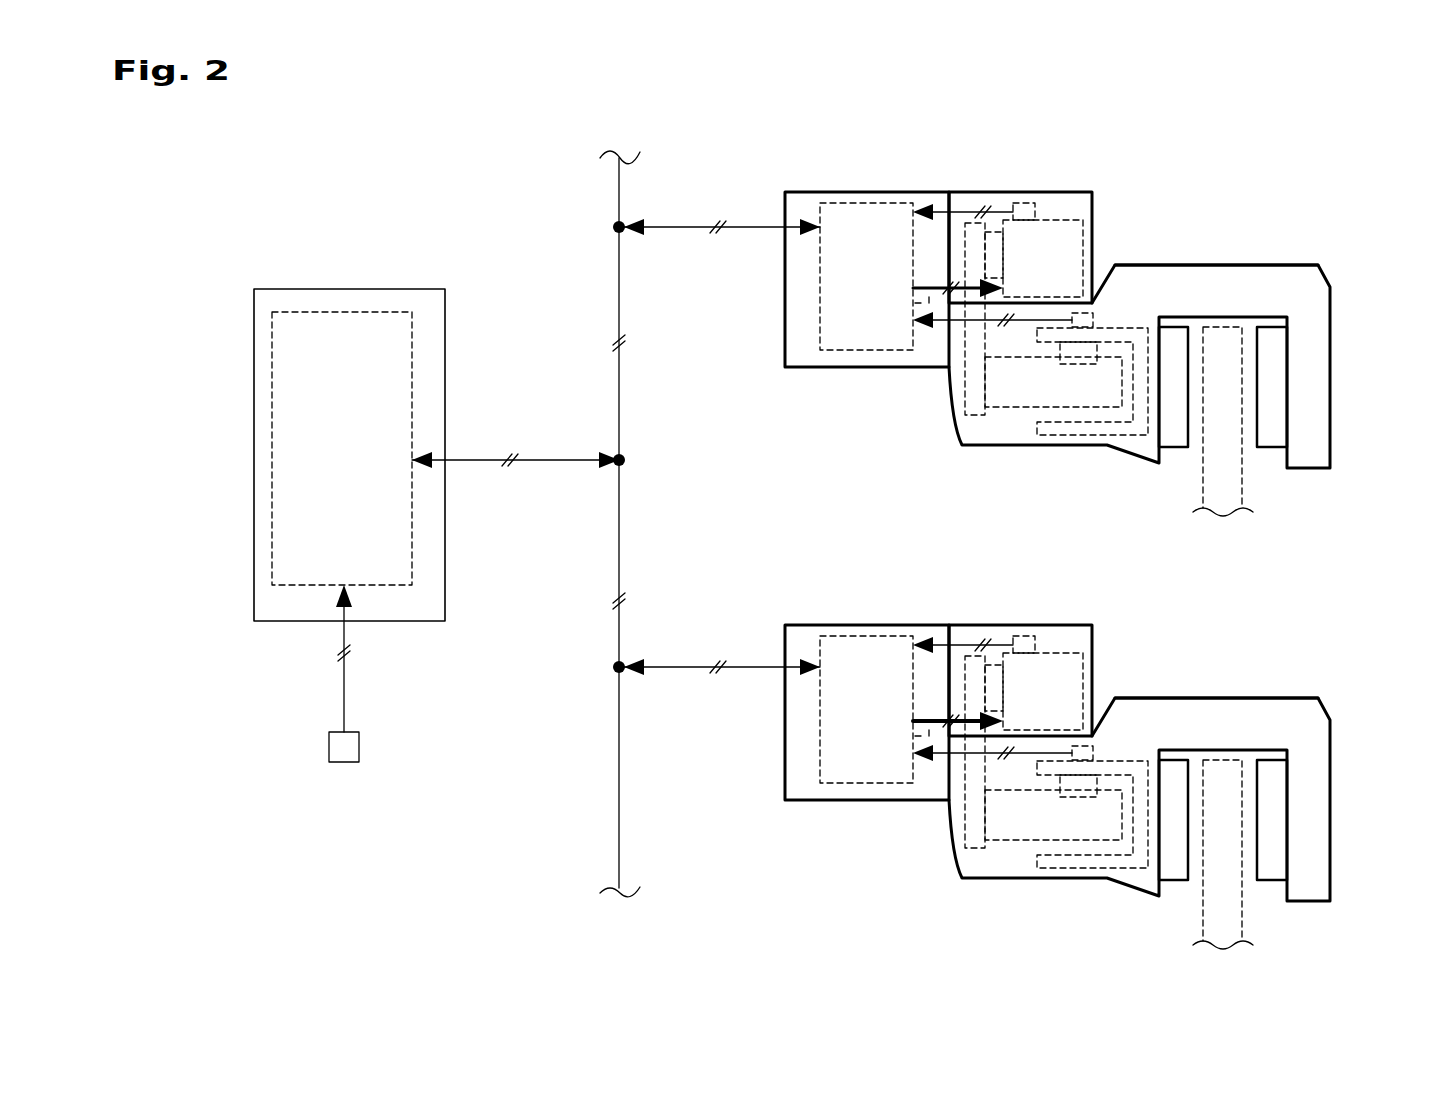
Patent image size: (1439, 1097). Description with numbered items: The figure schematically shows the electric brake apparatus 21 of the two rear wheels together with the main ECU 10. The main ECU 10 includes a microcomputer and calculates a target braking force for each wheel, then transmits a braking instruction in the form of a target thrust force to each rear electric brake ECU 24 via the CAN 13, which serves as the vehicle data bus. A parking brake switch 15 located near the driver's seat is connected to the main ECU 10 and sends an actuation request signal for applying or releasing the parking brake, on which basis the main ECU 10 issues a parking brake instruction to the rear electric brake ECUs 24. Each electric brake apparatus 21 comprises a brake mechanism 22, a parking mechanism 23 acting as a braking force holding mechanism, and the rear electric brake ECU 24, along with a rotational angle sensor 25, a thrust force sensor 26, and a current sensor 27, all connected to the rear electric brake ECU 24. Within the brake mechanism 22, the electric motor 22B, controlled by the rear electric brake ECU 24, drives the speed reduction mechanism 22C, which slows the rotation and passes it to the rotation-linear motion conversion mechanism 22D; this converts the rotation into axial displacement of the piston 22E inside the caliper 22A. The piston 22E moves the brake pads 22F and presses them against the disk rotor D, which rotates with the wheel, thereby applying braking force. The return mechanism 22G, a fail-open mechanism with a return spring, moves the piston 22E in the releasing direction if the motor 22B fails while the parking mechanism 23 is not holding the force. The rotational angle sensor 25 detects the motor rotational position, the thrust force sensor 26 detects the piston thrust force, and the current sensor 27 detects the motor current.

The main ECU 10 is at (340, 312).
The CAN 13 is at (616, 535).
The parking brake switch 15 is at (345, 745).
The electric brake apparatus 21 is at (1118, 210).
The brake mechanism 22 is at (1285, 252).
The caliper 22A is at (1148, 300).
The electric motor 22B is at (1060, 220).
The speed reduction mechanism 22C is at (963, 373).
The rotation-linear motion conversion mechanism 22D is at (1017, 407).
The piston 22E is at (1078, 435).
The brake pads 22F is at (1170, 355).
The return mechanism 22G is at (1083, 364).
The parking mechanism 23 is at (993, 228).
The rear electric brake ECU 24 is at (868, 203).
The rotational angle sensor 25 is at (1023, 203).
The thrust force sensor 26 is at (1098, 313).
The current sensor 27 is at (925, 300).
The disk rotor D is at (1242, 498).